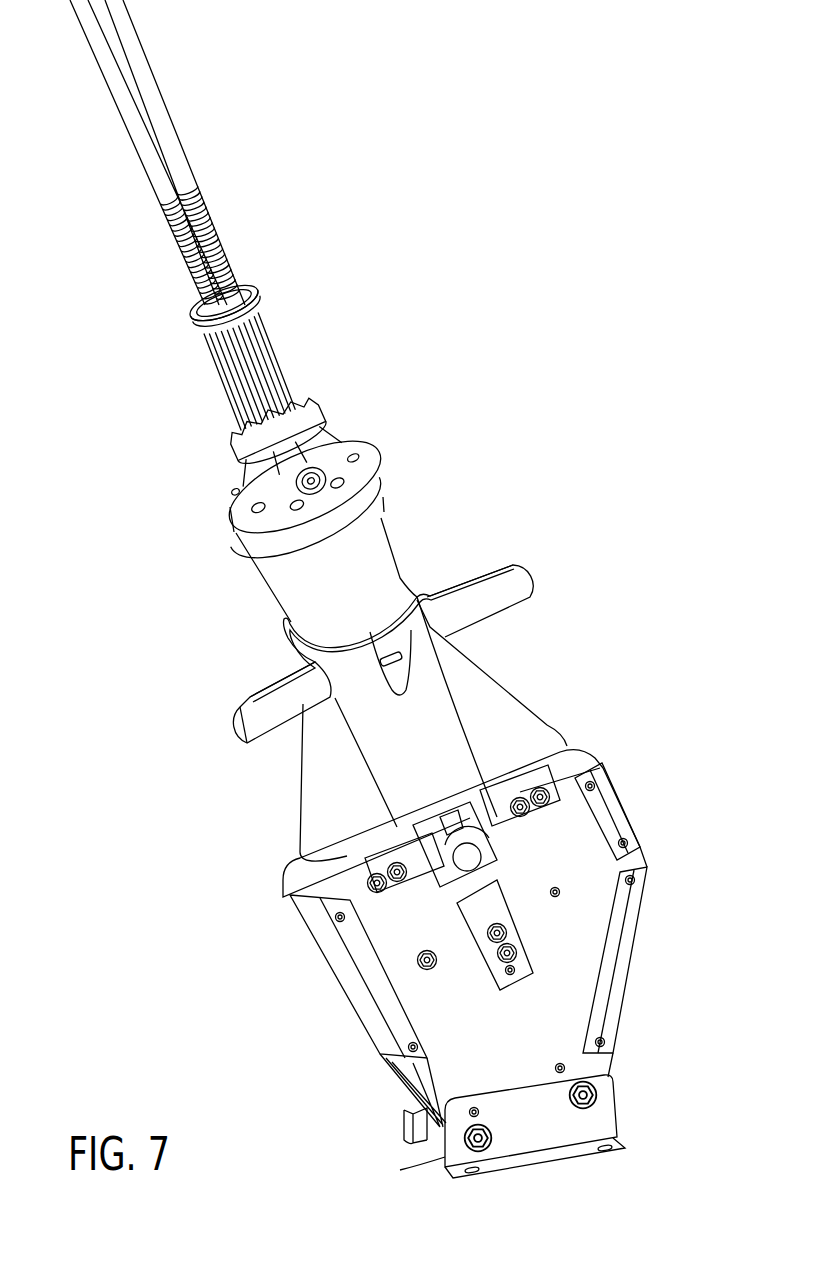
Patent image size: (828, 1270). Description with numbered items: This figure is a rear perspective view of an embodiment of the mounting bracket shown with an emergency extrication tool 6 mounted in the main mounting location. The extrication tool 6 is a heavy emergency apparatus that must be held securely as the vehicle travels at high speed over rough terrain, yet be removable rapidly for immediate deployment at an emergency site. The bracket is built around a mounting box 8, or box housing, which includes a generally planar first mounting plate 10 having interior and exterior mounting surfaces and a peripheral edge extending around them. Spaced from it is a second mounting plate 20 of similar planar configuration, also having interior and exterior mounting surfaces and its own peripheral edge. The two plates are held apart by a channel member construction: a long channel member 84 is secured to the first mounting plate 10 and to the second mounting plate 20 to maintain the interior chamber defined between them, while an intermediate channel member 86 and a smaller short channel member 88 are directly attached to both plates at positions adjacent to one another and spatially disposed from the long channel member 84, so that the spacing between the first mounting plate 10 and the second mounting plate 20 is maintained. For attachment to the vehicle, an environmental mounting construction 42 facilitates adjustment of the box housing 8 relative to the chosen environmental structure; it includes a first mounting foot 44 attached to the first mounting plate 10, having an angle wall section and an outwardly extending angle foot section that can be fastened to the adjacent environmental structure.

The extrication tool 6 is at (375, 493).
The mounting box 8 is at (578, 748).
The first mounting plate 10 is at (486, 1038).
The second mounting plate 20 is at (397, 1090).
The environmental mounting construction 42 is at (447, 1170).
The first mounting foot 44 is at (615, 1110).
The long channel member 84 is at (355, 963).
The intermediate channel member 86 is at (625, 962).
The short channel member 88 is at (612, 803).